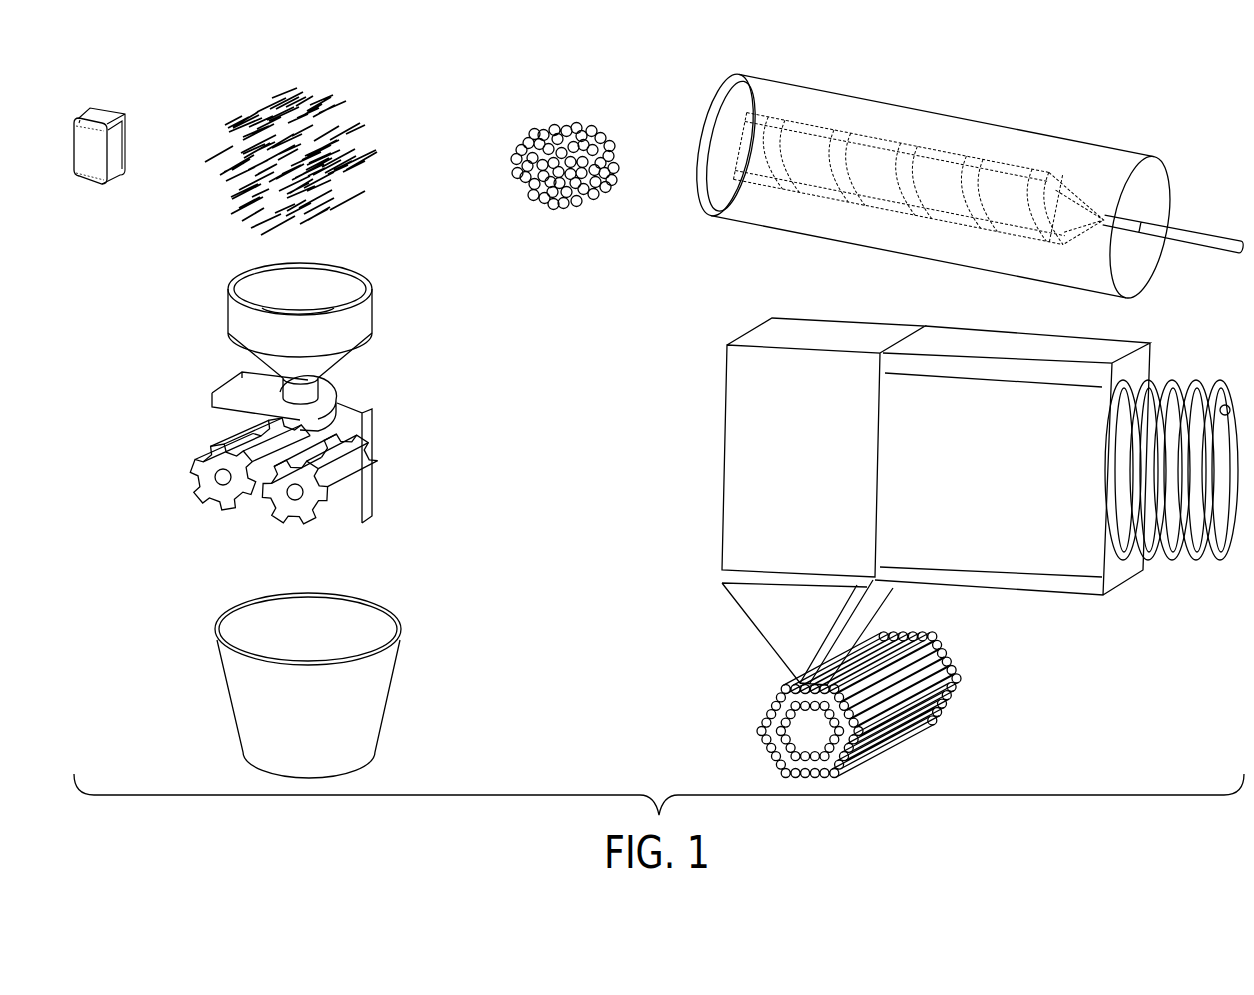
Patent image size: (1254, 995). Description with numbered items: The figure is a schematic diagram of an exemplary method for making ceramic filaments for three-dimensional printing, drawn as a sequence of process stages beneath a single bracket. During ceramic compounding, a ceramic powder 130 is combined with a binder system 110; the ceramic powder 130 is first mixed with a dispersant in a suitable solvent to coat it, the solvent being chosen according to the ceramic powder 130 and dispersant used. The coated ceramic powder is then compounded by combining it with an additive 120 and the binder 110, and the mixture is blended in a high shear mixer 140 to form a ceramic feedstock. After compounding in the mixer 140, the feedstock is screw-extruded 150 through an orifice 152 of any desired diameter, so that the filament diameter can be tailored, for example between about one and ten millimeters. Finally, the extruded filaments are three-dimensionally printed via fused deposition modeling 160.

The binder system 110 is at (103, 110).
The additive 120 is at (308, 93).
The ceramic powder 130 is at (572, 128).
The high shear mixer 140 is at (363, 317).
The screw extruder 150 is at (887, 108).
The orifice 152 is at (1217, 242).
The fused deposition modeling 160 is at (732, 460).